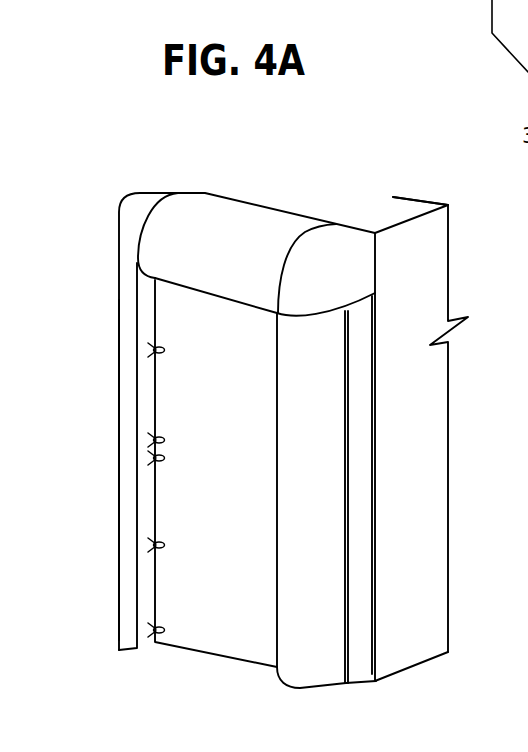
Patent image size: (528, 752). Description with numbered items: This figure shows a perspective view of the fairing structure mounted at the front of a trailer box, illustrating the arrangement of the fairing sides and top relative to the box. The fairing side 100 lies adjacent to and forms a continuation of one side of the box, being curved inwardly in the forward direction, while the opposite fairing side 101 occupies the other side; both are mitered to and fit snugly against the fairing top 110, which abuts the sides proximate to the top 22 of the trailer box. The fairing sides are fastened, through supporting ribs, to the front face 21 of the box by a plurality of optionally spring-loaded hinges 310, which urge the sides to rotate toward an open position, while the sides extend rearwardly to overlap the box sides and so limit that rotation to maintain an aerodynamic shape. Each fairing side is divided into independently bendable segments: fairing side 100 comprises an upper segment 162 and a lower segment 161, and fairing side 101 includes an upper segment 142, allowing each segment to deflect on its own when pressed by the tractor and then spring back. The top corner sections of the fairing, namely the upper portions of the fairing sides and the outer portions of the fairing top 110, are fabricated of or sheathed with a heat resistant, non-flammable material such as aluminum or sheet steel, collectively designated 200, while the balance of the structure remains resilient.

The fairing side 100 is at (128, 404).
The fairing side 101 is at (318, 528).
The fairing top 110 is at (237, 222).
The upper segment 142 is at (363, 380).
The lower segment 161 is at (118, 563).
The upper segment 162 is at (128, 348).
The heat resistant and non-flammable material 200 is at (331, 248).
The front face of box of trailer 21 is at (233, 543).
The top of box of trailer 22 is at (384, 218).
The hinges 310 is at (154, 556).